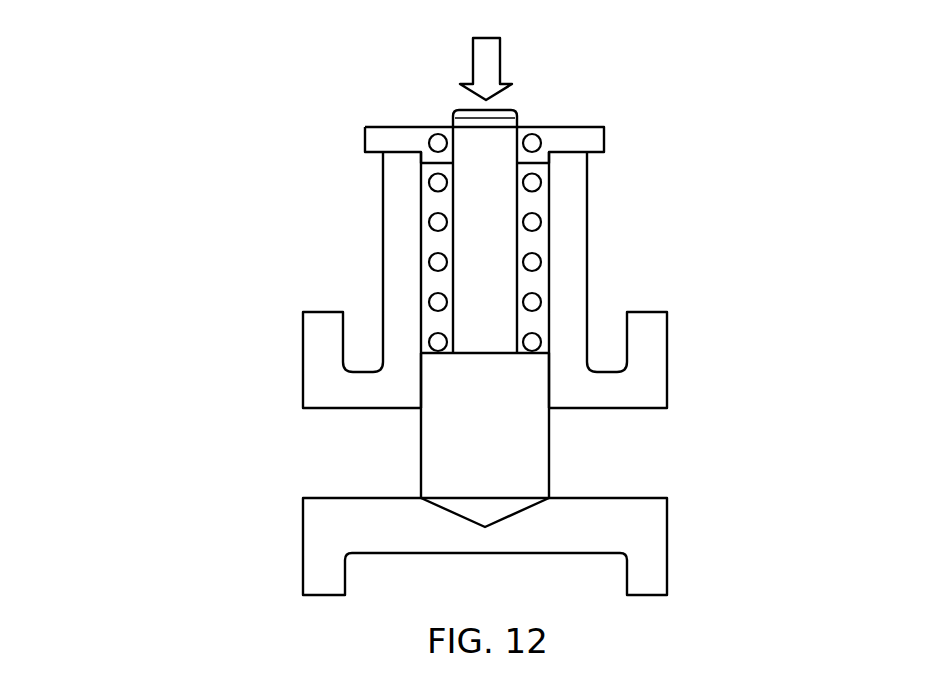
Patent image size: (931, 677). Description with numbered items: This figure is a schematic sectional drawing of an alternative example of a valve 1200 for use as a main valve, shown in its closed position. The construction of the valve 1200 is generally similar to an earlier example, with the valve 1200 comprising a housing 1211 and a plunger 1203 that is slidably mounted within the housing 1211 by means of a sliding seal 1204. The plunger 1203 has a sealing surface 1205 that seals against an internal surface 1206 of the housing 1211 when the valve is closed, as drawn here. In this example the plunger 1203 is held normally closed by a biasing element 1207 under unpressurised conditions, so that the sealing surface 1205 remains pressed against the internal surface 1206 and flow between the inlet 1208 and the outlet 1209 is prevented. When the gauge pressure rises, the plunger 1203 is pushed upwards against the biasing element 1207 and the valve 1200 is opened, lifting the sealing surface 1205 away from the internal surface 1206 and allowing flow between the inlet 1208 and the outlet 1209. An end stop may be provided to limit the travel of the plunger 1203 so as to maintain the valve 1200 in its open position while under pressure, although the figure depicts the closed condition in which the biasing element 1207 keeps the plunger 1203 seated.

The valve 1200 is at (437, 328).
The plunger 1203 is at (467, 242).
The sliding seal 1204 is at (534, 137).
The sealing surface 1205 is at (443, 510).
The internal surface 1206 is at (473, 518).
The biasing element 1207 is at (545, 221).
The inlet 1208 is at (316, 448).
The outlet 1209 is at (640, 460).
The housing 1211 is at (303, 337).